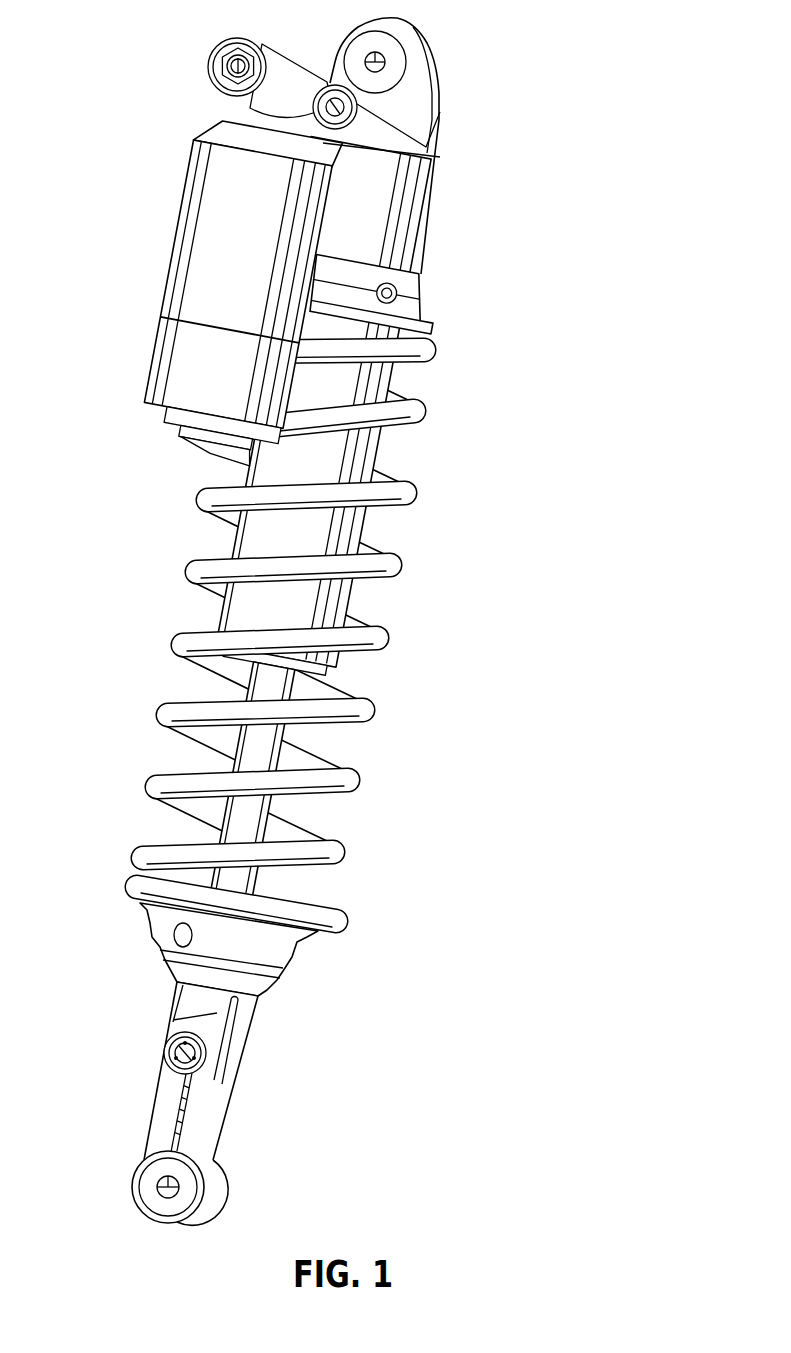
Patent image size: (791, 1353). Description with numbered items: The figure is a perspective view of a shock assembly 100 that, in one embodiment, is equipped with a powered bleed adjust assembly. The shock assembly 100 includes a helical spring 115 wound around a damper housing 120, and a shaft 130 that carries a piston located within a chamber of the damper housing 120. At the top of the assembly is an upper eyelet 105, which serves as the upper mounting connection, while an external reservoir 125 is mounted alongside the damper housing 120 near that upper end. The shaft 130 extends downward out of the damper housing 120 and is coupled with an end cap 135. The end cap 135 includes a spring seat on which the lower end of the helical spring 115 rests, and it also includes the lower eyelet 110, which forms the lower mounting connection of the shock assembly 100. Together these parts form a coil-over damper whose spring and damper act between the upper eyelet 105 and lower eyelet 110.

The shock assembly 100 is at (346, 620).
The upper eyelet 105 is at (385, 62).
The lower eyelet 110 is at (172, 1187).
The helical spring 115 is at (416, 493).
The damper housing 120 is at (370, 390).
The external reservoir 125 is at (200, 295).
The shaft 130 is at (337, 677).
The end cap 135 is at (300, 953).